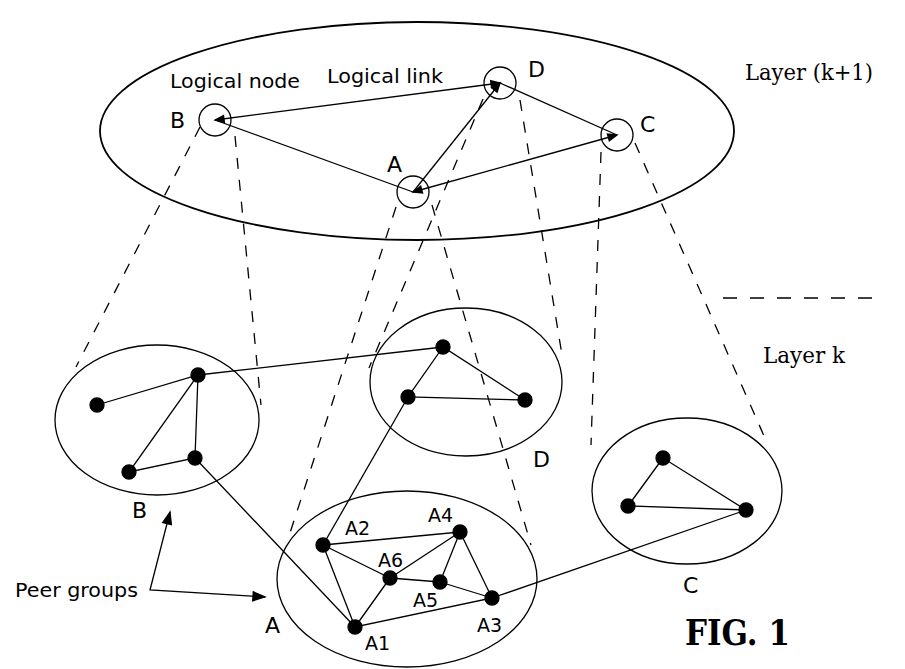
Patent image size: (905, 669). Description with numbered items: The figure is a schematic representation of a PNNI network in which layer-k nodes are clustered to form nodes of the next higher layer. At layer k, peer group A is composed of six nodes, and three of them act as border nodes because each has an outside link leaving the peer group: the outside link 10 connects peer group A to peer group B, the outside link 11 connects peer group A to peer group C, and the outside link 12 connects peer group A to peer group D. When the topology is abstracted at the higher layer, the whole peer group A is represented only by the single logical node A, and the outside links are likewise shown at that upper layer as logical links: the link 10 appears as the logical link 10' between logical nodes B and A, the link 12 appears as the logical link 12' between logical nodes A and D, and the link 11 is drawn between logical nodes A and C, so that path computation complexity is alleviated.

The outside link 10 is at (275, 542).
The logical link 10' is at (314, 155).
The outside link 11 is at (495, 172).
The outside link 12 is at (376, 471).
The logical link 12' is at (472, 137).